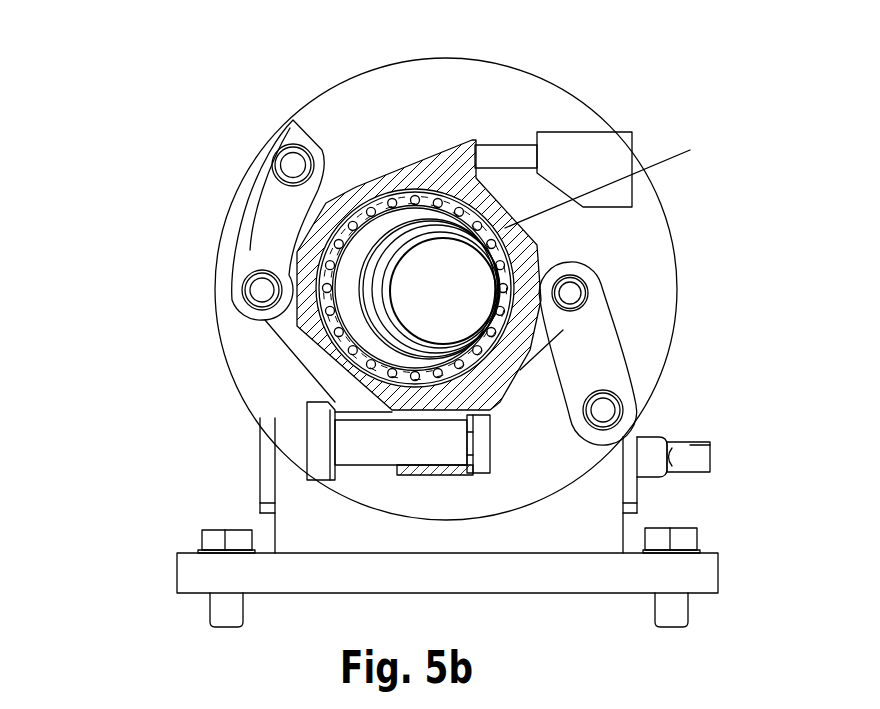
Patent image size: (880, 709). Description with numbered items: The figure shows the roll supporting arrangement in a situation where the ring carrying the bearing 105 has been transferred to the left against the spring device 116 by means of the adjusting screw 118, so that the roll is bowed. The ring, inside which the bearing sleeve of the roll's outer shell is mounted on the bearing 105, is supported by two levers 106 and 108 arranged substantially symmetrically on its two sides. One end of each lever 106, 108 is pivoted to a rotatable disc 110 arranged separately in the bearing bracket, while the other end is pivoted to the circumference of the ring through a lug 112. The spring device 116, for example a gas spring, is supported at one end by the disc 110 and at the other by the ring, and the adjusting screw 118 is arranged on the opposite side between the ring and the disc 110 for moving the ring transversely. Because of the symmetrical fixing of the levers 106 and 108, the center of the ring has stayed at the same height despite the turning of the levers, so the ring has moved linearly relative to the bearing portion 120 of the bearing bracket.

The bearing 105 is at (503, 240).
The lever 106 is at (267, 205).
The lever 108 is at (590, 338).
The rotatable disc 110 is at (412, 121).
The lug 112 is at (508, 131).
The spring device 116 is at (360, 442).
The adjusting screw 118 is at (507, 153).
The bearing portion 120 is at (390, 267).